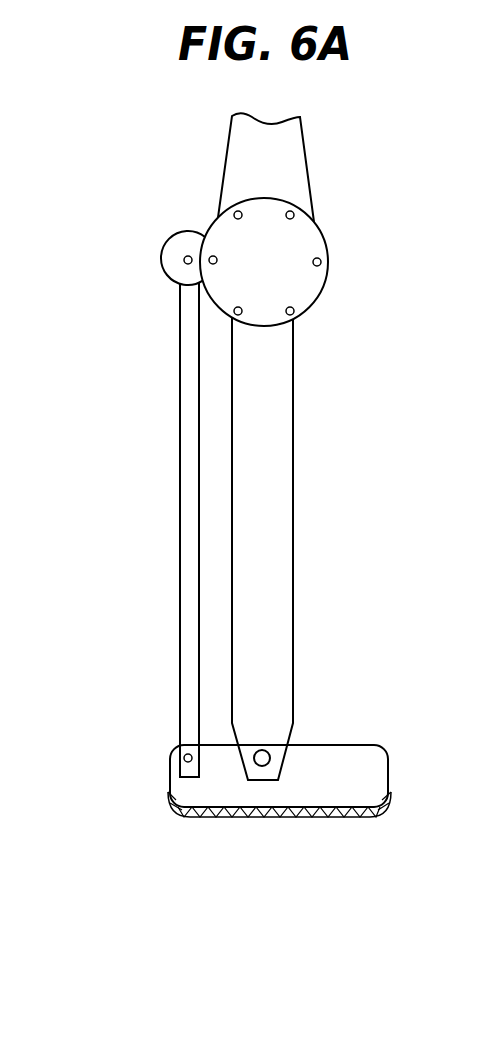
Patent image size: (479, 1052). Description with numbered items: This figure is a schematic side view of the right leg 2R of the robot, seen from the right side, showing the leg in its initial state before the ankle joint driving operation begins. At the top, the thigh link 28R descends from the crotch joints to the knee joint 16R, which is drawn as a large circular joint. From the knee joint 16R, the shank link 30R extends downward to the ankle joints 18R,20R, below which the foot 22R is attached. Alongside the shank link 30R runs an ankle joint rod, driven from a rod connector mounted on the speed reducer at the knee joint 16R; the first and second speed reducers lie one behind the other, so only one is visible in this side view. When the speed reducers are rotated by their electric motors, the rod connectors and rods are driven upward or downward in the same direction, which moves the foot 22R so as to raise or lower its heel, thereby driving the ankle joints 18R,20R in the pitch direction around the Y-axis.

The right leg 2R is at (255, 448).
The thigh link 28R is at (240, 146).
The knee joint 16R is at (320, 244).
The shank link 30R is at (280, 460).
The ankle joints 18R,20R is at (318, 737).
The foot 22R is at (372, 783).